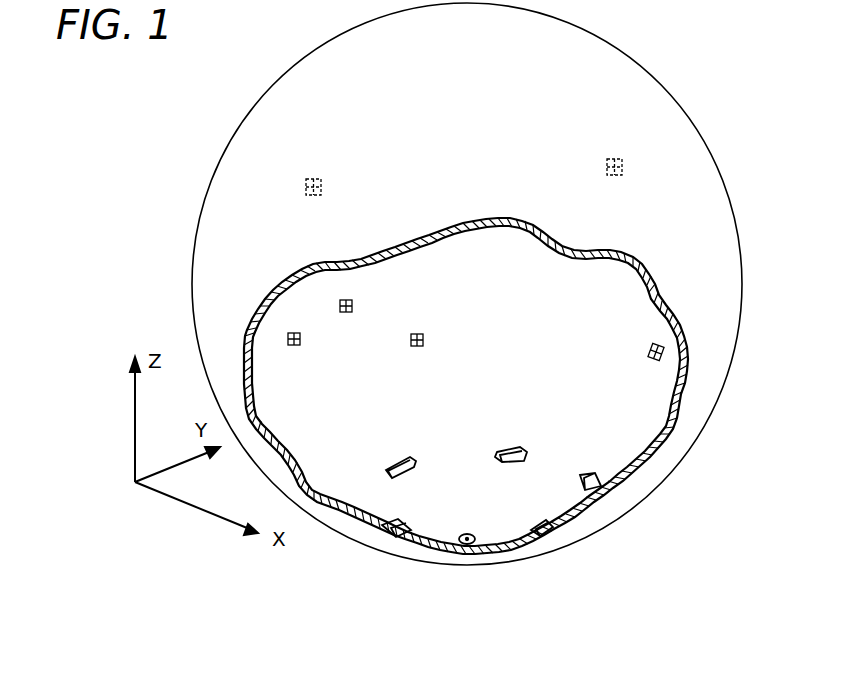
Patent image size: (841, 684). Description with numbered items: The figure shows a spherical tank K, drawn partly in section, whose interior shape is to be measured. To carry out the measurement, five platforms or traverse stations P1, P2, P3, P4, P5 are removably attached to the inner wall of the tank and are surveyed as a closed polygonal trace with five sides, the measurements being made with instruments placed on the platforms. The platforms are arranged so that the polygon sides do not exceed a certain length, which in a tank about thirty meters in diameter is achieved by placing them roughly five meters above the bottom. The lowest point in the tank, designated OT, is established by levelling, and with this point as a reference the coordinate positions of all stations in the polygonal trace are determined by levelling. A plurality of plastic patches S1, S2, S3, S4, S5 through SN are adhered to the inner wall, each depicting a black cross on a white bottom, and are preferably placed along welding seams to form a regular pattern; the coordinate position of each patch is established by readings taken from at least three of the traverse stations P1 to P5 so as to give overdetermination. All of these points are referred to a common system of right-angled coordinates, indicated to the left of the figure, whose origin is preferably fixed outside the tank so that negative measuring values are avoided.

The spherical tank K is at (684, 149).
The plastic patch SN is at (323, 181).
The plastic patch S1 is at (301, 337).
The plastic patch S2 is at (353, 307).
The plastic patch S3 is at (424, 340).
The plastic patch S4 is at (648, 355).
The plastic patch S5 is at (605, 171).
The platform or traverse station P1 is at (398, 457).
The platform or traverse station P2 is at (512, 445).
The platform or traverse station P3 is at (587, 473).
The platform or traverse station P4 is at (541, 531).
The platform or traverse station P5 is at (394, 522).
The lowest point in the tank OT is at (466, 533).